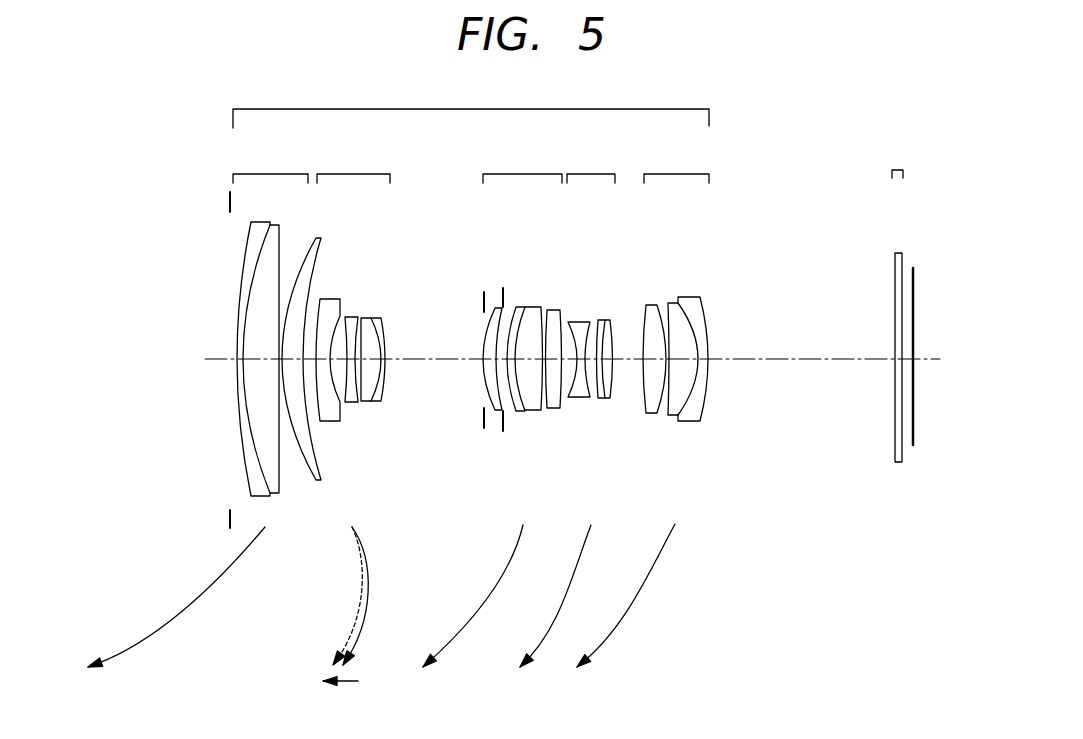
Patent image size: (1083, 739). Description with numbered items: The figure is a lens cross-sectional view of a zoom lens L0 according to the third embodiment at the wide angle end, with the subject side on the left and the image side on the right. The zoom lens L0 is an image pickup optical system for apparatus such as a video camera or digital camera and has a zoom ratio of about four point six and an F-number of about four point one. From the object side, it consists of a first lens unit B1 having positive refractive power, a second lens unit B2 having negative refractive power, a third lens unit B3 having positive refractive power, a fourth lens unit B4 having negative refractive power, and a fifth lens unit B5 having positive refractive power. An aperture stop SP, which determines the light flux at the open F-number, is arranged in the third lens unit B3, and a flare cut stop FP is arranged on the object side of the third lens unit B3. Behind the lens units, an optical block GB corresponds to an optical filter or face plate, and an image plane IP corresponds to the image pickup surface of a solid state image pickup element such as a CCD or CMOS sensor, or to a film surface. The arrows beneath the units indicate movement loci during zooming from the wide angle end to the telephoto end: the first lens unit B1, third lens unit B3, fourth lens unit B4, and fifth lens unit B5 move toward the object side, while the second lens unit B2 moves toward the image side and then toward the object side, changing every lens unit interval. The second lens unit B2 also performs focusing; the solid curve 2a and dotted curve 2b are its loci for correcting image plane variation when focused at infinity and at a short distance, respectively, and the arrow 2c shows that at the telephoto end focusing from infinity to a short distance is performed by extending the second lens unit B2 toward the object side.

The zoom lens L0 is at (471, 105).
The first lens unit B1 is at (204, 408).
The second lens unit B2 is at (353, 285).
The third lens unit B3 is at (492, 408).
The fourth lens unit B4 is at (567, 408).
The fifth lens unit B5 is at (643, 408).
The flare cut stop FP is at (483, 427).
The aperture stop SP is at (505, 428).
The optical block GB is at (897, 304).
The image plane IP is at (915, 286).
The solid curve 2a is at (361, 633).
The dotted curve 2b is at (357, 625).
The arrow 2c is at (347, 683).